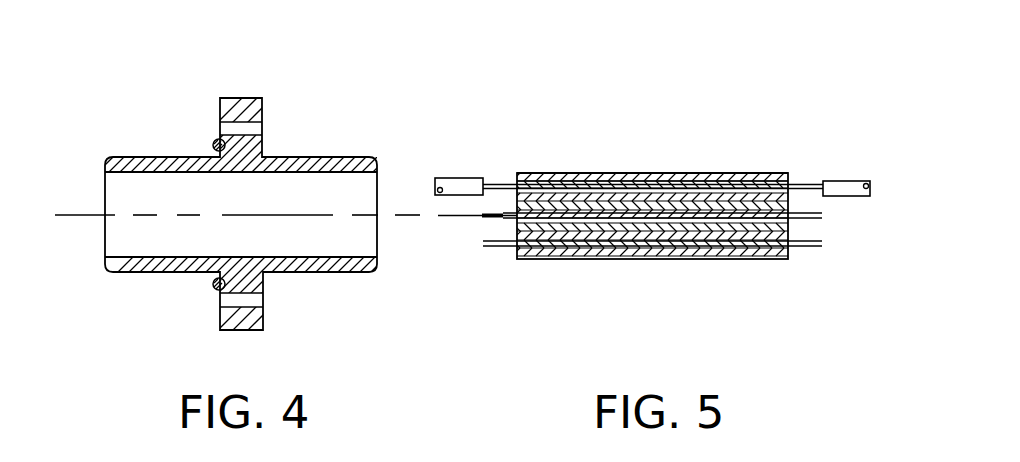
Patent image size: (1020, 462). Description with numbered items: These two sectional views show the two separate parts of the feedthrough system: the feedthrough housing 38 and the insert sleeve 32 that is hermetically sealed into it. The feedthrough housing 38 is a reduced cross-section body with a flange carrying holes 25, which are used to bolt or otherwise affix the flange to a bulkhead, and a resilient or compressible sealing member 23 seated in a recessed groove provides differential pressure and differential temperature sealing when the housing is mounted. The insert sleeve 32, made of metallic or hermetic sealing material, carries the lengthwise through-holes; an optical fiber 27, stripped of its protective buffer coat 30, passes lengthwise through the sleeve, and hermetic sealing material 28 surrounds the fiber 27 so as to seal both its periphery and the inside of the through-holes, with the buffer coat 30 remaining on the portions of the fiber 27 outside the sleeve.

In FIG. 4, the sealing member 23 is at (216, 143).
In FIG. 4, the holes 25 is at (191, 183).
In FIG. 4, the feedthrough housing 38 is at (263, 214).
In FIG. 5, the optical fiber 27 is at (660, 170).
In FIG. 5, the hermetic sealing material 28 is at (654, 183).
In FIG. 5, the protective buffer coat 30 is at (869, 221).
In FIG. 5, the insert sleeve 32 is at (652, 140).